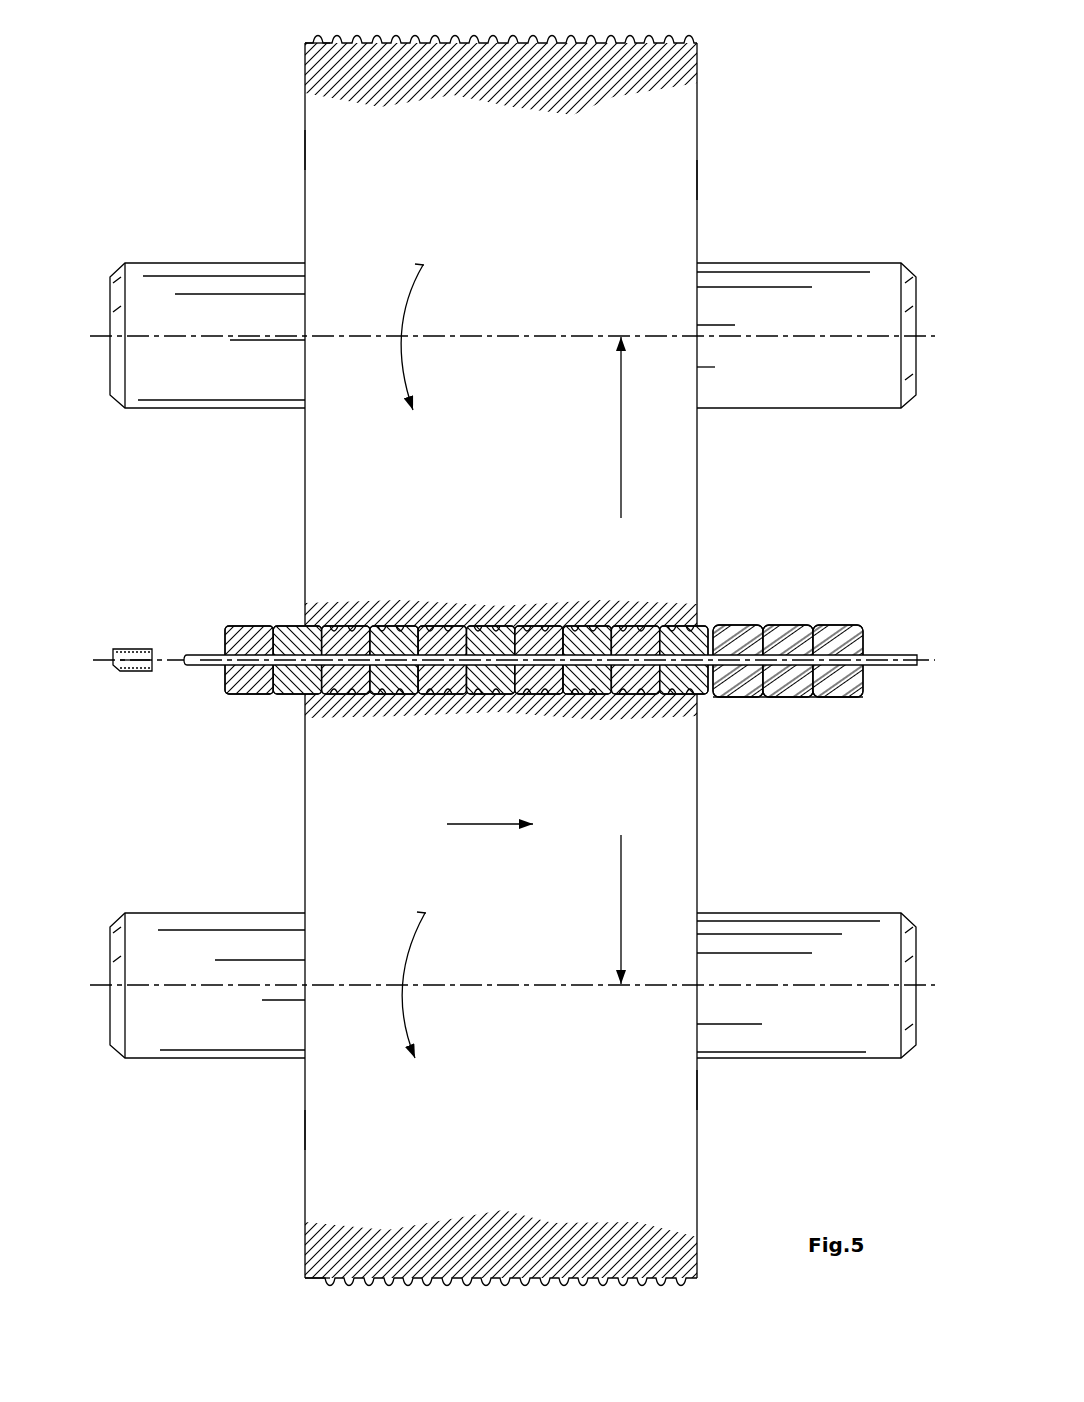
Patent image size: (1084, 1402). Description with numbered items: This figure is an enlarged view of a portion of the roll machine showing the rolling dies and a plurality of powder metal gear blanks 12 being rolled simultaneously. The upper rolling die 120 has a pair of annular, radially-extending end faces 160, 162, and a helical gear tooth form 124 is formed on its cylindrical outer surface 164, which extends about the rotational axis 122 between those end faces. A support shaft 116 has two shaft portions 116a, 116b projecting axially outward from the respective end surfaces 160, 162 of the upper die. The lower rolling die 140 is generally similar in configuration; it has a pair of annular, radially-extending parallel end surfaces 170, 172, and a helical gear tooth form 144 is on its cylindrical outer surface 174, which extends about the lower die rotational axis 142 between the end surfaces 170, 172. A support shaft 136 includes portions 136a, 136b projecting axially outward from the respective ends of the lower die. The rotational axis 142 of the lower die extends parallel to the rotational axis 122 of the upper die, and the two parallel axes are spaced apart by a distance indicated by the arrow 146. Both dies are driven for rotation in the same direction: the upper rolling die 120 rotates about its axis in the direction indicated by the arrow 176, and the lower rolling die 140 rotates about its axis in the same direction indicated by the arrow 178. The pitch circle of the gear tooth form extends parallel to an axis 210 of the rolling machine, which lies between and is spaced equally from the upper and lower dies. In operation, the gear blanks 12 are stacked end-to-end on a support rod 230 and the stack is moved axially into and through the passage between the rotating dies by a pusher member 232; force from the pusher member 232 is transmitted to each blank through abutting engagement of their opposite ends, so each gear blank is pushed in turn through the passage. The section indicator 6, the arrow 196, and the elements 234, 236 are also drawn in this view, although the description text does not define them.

The gear blanks 12 is at (292, 628).
The section line 6 is at (588, 26).
The support shaft 116 is at (837, 262).
The shaft portion 116a is at (750, 263).
The shaft portion 116b is at (235, 262).
The upper rolling die 120 is at (700, 95).
The rotational axis 122 is at (396, 714).
The helical gear tooth form 124 is at (670, 36).
The support shaft 136 is at (819, 1061).
The shaft portion 136a is at (806, 913).
The shaft portion 136b is at (228, 1060).
The lower rolling die 140 is at (699, 843).
The rotational axis 142 is at (96, 986).
The helical gear tooth form 144 is at (664, 1284).
The arrow 146 is at (621, 508).
The end face 160 is at (697, 180).
The end face 162 is at (305, 150).
The cylindrical outer surface 164 is at (362, 42).
The end surface 170 is at (698, 1088).
The end surface 172 is at (305, 1125).
The cylindrical outer surface 174 is at (370, 1280).
The arrow 176 is at (402, 342).
The arrow 178 is at (402, 958).
The axial direction 196 is at (470, 824).
The axis 210 is at (165, 660).
The support rod 230 is at (198, 666).
The pusher member 232 is at (138, 673).
The roller teeth 234 is at (822, 698).
The rollers 236 is at (745, 624).